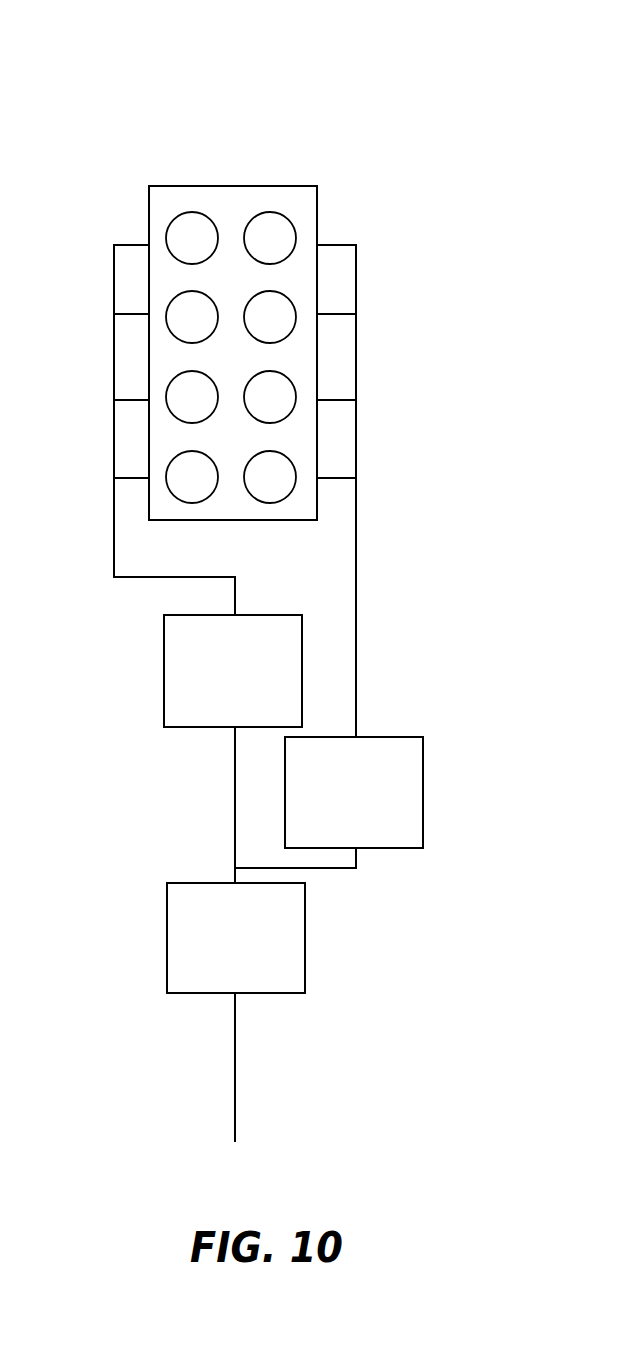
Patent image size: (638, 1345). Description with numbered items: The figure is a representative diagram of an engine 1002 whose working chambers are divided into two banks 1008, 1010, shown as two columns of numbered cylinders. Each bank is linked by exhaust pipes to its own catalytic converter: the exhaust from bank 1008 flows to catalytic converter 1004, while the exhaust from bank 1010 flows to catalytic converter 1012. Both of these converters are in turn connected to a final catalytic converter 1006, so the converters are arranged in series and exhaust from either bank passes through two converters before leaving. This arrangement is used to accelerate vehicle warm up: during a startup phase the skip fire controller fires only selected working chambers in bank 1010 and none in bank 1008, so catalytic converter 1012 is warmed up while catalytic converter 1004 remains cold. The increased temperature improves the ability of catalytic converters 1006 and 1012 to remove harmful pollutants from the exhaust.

The engine 1002 is at (303, 376).
The catalytic converter 1004 is at (208, 682).
The final catalytic converter 1006 is at (211, 950).
The bank 1008 is at (162, 116).
The bank 1010 is at (250, 112).
The catalytic converter 1012 is at (328, 805).